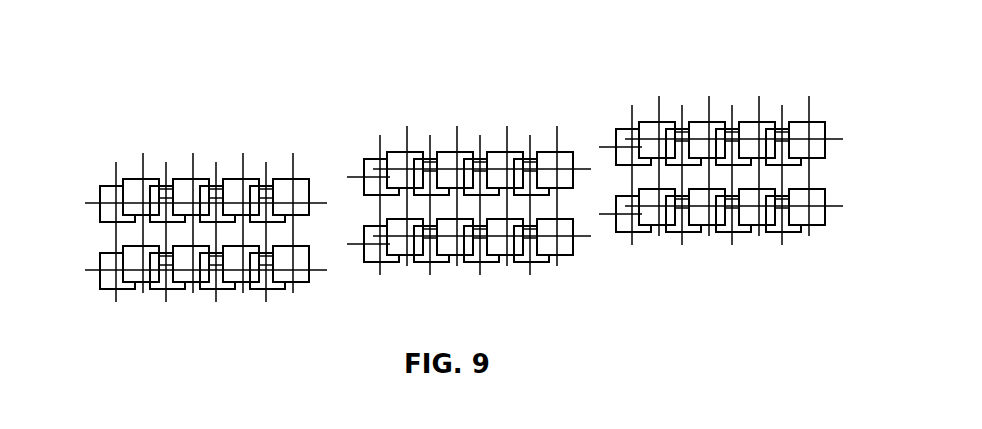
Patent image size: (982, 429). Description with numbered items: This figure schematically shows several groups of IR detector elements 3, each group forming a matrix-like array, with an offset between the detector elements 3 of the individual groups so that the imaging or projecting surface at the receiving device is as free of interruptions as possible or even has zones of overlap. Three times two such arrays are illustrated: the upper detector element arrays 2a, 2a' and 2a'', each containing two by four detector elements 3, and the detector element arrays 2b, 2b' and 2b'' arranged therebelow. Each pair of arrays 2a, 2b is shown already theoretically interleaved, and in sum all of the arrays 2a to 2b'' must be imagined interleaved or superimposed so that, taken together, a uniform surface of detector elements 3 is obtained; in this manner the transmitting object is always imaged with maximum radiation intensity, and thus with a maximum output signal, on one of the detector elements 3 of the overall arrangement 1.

The semiconductor memory device 1 is at (275, 102).
The detector element array 2a is at (721, 122).
The detector element array 2b is at (721, 235).
The detector element array 2a' is at (469, 154).
The detector element array 2b' is at (469, 262).
The detector element array 2a'' is at (208, 183).
The detector element array 2b'' is at (206, 287).
The detector elements 3 is at (183, 173).